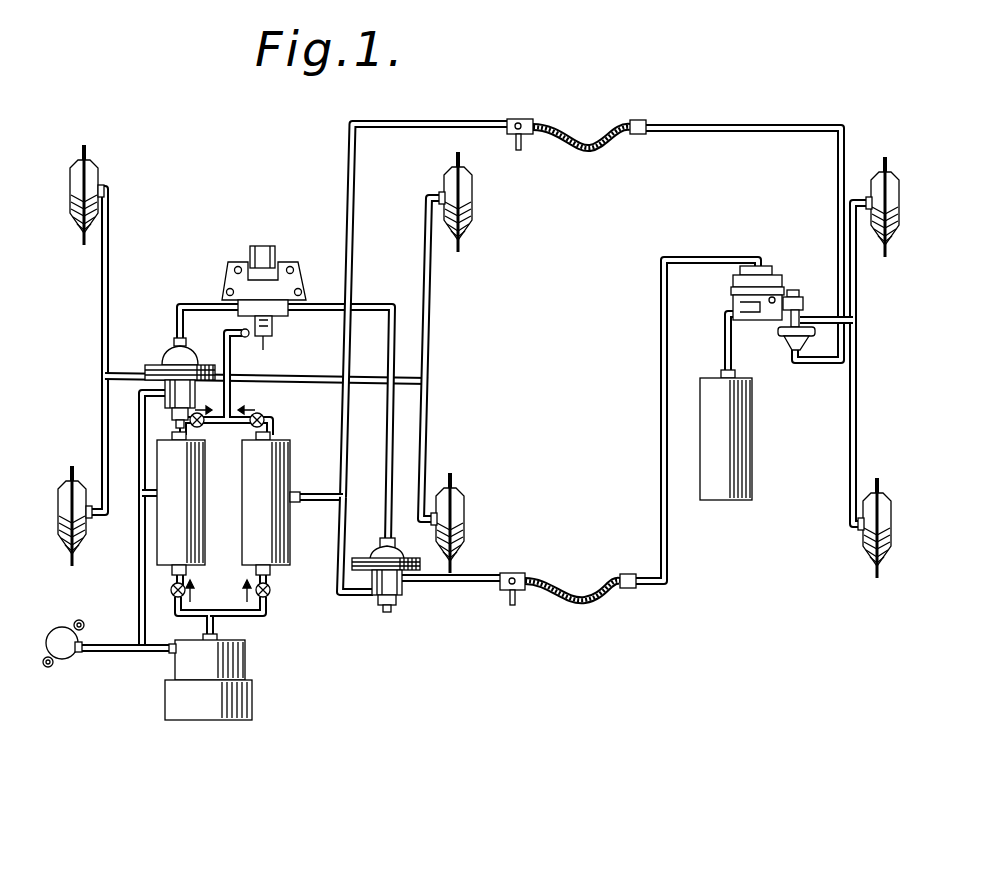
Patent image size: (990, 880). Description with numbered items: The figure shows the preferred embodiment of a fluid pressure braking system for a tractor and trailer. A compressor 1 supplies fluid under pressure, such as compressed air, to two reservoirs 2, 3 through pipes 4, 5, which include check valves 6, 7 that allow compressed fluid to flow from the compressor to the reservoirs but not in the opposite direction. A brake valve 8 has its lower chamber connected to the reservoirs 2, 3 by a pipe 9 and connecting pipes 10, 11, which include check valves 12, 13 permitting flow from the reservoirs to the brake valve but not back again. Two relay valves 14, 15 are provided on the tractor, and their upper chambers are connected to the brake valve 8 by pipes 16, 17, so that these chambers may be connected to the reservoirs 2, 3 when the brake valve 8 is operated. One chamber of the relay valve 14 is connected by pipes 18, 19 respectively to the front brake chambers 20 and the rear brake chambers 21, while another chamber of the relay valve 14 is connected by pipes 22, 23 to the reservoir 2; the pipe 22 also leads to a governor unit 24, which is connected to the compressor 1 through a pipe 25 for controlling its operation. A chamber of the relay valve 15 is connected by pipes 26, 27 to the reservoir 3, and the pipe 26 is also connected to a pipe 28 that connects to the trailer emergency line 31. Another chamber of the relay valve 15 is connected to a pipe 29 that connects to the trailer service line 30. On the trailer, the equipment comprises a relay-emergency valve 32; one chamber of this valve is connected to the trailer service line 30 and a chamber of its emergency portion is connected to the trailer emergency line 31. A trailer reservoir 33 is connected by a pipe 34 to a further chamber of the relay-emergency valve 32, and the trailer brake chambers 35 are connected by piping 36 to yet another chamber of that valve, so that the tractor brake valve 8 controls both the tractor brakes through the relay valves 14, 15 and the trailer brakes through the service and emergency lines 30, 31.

The compressor 1 is at (232, 672).
The reservoir 2 is at (198, 505).
The reservoir 3 is at (252, 510).
The pipe 4 is at (180, 618).
The pipe 5 is at (262, 616).
The check valve 6 is at (170, 592).
The check valve 7 is at (273, 591).
The brake valve 8 is at (268, 285).
The pipe 9 is at (238, 377).
The connecting pipe 10 is at (183, 432).
The connecting pipe 11 is at (272, 425).
The check valve 12 is at (200, 428).
The check valve 13 is at (265, 418).
The relay valve 14 is at (170, 356).
The relay valve 15 is at (380, 580).
The pipe 16 is at (200, 305).
The pipe 17 is at (392, 467).
The pipe 18 is at (101, 308).
The pipe 19 is at (429, 331).
The front brake chamber 20 is at (70, 207).
The rear brake chamber 21 is at (477, 208).
The pipe 22 is at (141, 413).
The pipe 23 is at (142, 505).
The governor unit 24 is at (62, 632).
The pipe 25 is at (100, 645).
The pipe 26 is at (318, 503).
The pipe 27 is at (337, 552).
The pipe 28 is at (355, 190).
The pipe 29 is at (455, 582).
The trailer service line 30 is at (665, 440).
The trailer emergency line 31 is at (724, 128).
The relay valve 32 is at (775, 277).
The trailer reservoir 33 is at (742, 445).
The pipe 34 is at (732, 352).
The trailer brake chamber 35 is at (896, 205).
The piping 36 is at (854, 372).